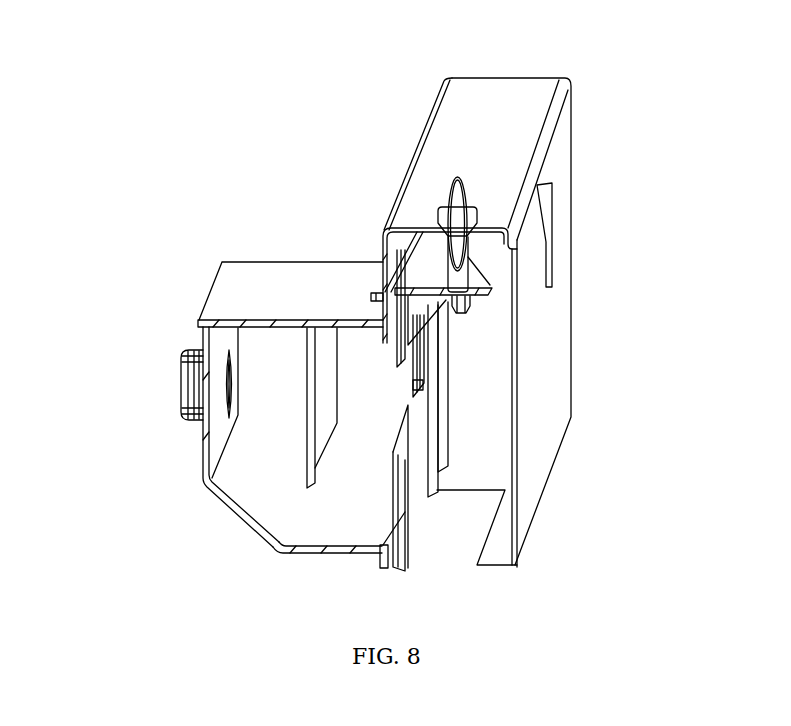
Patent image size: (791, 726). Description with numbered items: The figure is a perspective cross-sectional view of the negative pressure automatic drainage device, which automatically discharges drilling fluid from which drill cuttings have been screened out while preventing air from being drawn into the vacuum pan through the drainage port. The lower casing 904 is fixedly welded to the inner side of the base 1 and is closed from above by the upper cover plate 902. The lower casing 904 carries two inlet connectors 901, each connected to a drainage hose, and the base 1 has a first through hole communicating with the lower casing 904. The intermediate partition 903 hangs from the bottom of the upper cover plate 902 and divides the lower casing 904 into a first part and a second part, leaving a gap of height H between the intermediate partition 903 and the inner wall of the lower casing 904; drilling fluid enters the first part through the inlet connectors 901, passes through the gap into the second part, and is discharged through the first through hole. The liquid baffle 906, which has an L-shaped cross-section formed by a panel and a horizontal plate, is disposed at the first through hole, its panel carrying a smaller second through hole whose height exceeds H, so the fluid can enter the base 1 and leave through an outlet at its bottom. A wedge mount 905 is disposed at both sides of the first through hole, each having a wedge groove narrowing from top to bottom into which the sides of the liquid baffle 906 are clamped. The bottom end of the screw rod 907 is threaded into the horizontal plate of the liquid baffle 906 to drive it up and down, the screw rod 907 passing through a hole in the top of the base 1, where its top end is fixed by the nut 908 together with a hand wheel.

The base 1 is at (420, 198).
The inlet connector 901 is at (181, 368).
The upper cover plate 902 is at (272, 287).
The intermediate partition 903 is at (322, 404).
The lower casing 904 is at (347, 522).
The wedge mount 905 is at (442, 363).
The liquid baffle 906 is at (415, 487).
The screw rod 907 is at (462, 277).
The nut 908 is at (477, 207).